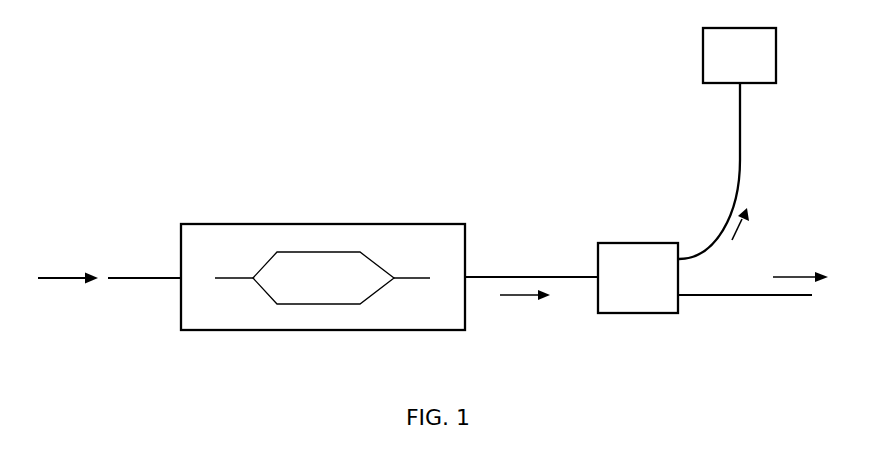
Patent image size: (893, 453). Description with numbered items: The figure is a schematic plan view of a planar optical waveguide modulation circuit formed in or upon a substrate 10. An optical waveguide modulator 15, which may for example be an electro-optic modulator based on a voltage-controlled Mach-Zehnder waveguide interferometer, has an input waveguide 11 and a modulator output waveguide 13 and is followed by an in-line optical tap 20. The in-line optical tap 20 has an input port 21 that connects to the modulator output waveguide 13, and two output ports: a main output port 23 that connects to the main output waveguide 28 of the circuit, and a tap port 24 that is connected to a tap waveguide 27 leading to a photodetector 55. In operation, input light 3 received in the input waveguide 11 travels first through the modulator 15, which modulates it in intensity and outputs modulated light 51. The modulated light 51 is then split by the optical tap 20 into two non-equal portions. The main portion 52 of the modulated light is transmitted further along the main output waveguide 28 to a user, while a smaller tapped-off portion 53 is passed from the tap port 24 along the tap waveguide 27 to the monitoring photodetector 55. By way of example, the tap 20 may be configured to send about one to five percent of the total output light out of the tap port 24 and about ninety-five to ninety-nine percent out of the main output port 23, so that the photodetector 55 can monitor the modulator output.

The input light 3 is at (72, 277).
The substrate 10 is at (439, 112).
The input waveguide 11 is at (163, 277).
The modulator output waveguide 13 is at (510, 275).
The optical waveguide modulator 15 is at (314, 223).
The in-line optical tap 20 is at (630, 242).
The input port 21 is at (597, 283).
The main output port 23 is at (680, 295).
The tap port 24 is at (681, 259).
The tap waveguide 27 is at (733, 193).
The main output waveguide 28 is at (748, 295).
The modulated light 51 is at (527, 296).
The main portion of the modulated light 52 is at (797, 277).
The tapped-off portion 53 is at (740, 227).
The photodetector 55 is at (703, 59).